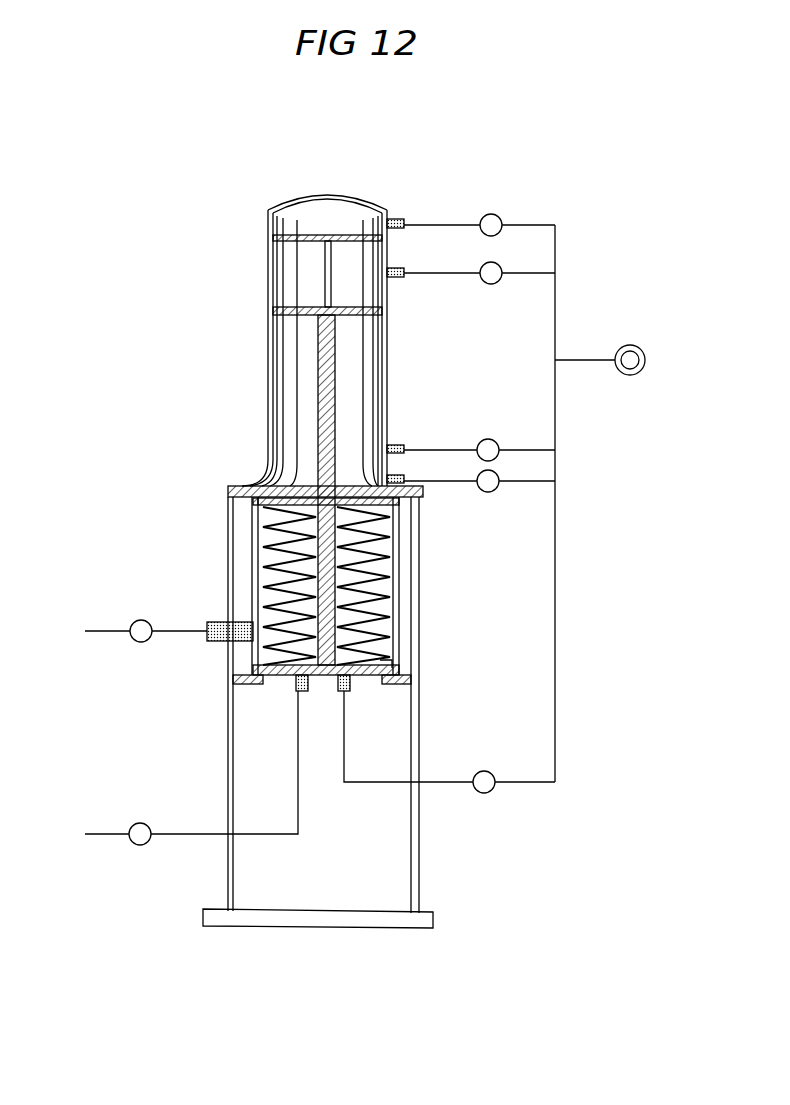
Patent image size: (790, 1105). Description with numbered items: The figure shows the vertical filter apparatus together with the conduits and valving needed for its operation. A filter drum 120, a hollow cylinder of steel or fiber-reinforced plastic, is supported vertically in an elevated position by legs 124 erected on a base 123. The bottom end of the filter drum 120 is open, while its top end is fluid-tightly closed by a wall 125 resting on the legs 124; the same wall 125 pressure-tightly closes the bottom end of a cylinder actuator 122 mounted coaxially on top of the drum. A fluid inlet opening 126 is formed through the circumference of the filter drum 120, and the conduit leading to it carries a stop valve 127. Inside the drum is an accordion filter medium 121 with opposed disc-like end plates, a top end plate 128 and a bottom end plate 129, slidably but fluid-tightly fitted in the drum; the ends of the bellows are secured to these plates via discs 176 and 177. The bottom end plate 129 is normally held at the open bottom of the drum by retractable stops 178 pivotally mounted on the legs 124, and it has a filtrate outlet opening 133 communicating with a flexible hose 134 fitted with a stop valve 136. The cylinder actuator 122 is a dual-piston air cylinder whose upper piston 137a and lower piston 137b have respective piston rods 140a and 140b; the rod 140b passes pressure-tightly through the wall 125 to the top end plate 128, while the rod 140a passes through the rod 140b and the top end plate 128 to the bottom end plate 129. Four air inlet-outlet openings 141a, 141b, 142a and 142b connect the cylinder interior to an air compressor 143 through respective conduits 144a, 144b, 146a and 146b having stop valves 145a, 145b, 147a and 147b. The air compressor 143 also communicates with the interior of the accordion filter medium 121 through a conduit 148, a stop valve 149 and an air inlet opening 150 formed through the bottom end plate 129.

The filter drum 120 is at (399, 553).
The accordion filter medium 121 is at (370, 580).
The cylinder actuator 122 is at (387, 347).
The base 123 is at (425, 912).
The legs 124 is at (419, 832).
The wall 125 is at (262, 486).
The fluid inlet opening 126 is at (218, 622).
The stop valve 127 is at (136, 620).
The top end plate 128 is at (258, 505).
The bottom end plate 129 is at (385, 668).
The filtrate outlet opening 133 is at (300, 693).
The hose 134 is at (180, 832).
The stop valve 136 is at (130, 823).
The upper piston 137a is at (290, 238).
The lower piston 137b is at (295, 313).
The piston rod 140a is at (325, 290).
The piston rod 140b is at (320, 400).
The air inlet-outlet opening 141a is at (400, 222).
The air inlet-outlet opening 141b is at (400, 272).
The air inlet-outlet opening 142a is at (403, 447).
The air inlet-outlet opening 142b is at (405, 478).
The air compressor 143 is at (625, 345).
The conduit 144a is at (545, 225).
The conduit 144b is at (535, 275).
The stop valve 145a is at (496, 214).
The stop valve 145b is at (496, 262).
The conduit 146a is at (548, 450).
The conduit 146b is at (555, 481).
The stop valve 147a is at (493, 440).
The stop valve 147b is at (495, 472).
The conduit 148 is at (555, 585).
The stop valve 149 is at (484, 771).
The air inlet opening 150 is at (346, 693).
The disc 176 is at (395, 506).
The disc 177 is at (390, 660).
The retractable stops 178 is at (255, 681).